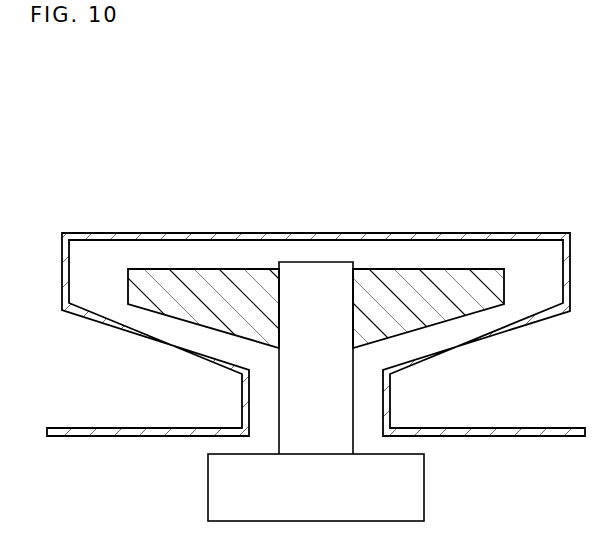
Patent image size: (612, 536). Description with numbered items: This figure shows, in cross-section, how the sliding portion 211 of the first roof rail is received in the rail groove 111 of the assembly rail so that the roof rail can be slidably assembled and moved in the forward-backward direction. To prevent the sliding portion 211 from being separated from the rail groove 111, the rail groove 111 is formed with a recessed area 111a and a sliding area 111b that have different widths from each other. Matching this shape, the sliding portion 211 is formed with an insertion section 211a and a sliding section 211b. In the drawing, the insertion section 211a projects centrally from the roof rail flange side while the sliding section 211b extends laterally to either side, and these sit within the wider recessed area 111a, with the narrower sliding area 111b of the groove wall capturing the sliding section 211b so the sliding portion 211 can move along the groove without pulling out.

The sliding portion 211 is at (153, 108).
The insertion section 211a is at (312, 282).
The sliding section 211b is at (178, 282).
The rail groove 111 is at (405, 118).
The recessed area 111a is at (382, 402).
The sliding area 111b is at (483, 240).